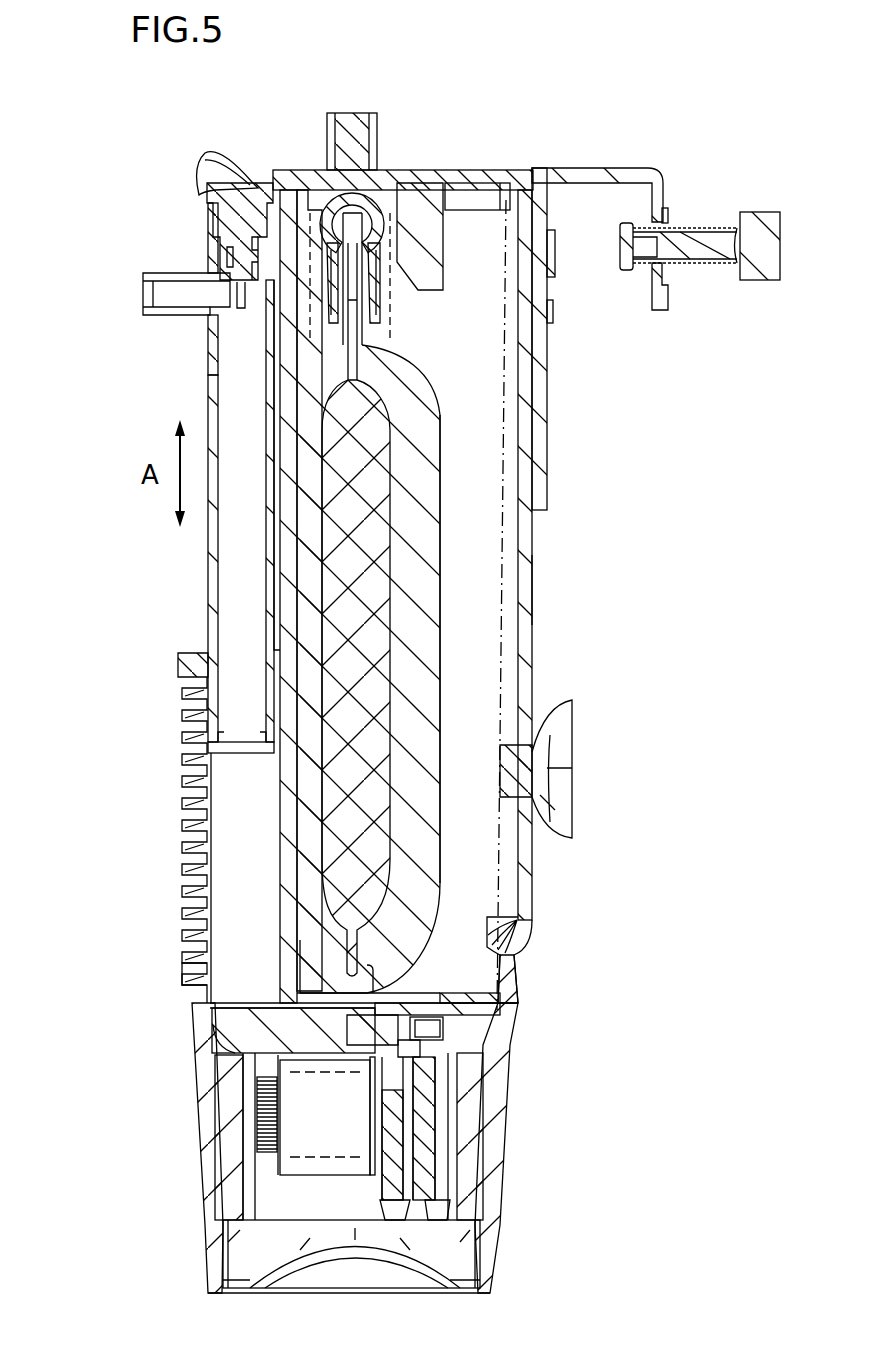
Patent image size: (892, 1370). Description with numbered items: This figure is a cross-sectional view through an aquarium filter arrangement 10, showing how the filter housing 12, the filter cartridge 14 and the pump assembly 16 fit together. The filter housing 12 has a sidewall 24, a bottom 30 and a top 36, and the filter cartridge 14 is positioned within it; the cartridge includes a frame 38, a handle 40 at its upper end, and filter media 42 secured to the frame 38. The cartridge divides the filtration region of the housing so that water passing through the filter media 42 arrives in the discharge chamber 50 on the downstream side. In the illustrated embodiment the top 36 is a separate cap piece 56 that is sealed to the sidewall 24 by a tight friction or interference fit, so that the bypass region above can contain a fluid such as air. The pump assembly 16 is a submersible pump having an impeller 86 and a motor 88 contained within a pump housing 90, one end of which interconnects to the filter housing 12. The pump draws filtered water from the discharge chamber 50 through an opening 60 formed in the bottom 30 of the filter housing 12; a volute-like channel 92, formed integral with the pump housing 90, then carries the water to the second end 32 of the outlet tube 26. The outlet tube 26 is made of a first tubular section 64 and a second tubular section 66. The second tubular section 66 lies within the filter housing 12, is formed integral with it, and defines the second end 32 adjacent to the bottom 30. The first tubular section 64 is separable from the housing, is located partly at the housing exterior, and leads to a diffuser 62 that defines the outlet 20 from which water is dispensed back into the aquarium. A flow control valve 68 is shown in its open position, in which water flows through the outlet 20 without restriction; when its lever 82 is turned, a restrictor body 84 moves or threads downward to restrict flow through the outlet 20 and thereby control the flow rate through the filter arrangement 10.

The filter arrangement 10 is at (118, 159).
The filter housing 12 is at (533, 648).
The filter cartridge 14 is at (452, 519).
The pump assembly 16 is at (500, 1128).
The outlet 20 is at (122, 296).
The sidewall 24 is at (533, 590).
The outlet tube 26 is at (193, 735).
The bottom 30 is at (300, 973).
The second end 32 is at (190, 971).
The top 36 is at (450, 170).
The frame 38 is at (360, 307).
The handle 40 is at (363, 200).
The filter media 42 is at (430, 433).
The discharge chamber 50 is at (449, 340).
The cap piece 56 is at (300, 170).
The opening 60 is at (427, 992).
The diffuser 62 is at (160, 315).
The first tubular section 64 is at (210, 562).
The second tubular section 66 is at (210, 873).
The flow control valve 68 is at (252, 183).
The lever 82 is at (207, 157).
The restrictor body 84 is at (228, 257).
The impeller 86 is at (443, 1027).
The motor 88 is at (263, 1133).
The pump housing 90 is at (497, 1209).
The volute-like channel 92 is at (230, 1033).